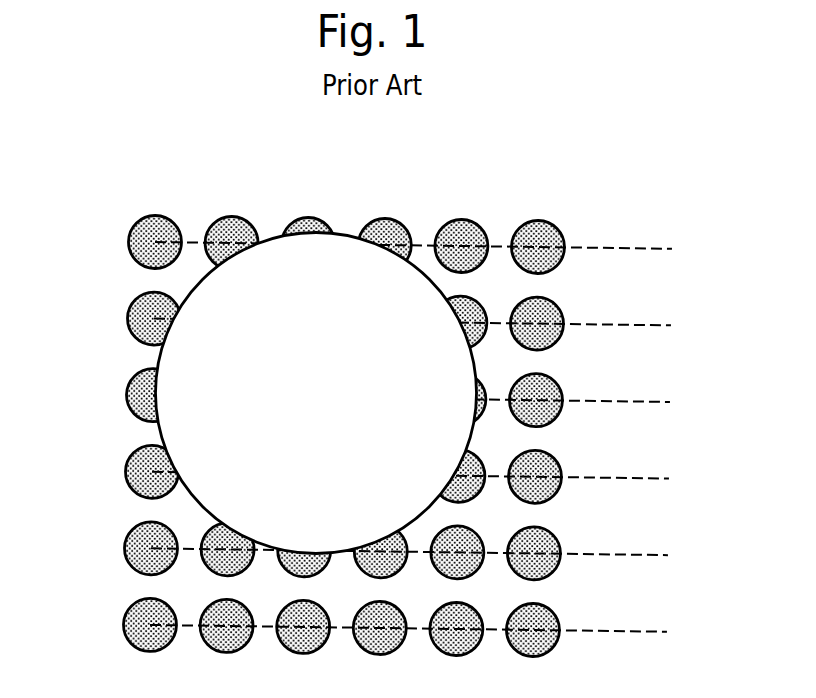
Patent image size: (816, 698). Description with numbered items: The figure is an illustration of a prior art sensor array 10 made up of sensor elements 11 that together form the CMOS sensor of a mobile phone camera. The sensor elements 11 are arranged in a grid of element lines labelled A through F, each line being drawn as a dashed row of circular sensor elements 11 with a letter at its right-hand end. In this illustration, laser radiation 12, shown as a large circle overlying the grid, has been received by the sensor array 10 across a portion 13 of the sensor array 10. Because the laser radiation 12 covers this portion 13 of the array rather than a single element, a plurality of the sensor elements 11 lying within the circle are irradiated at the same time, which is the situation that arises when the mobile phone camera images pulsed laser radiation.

The sensor array 10 is at (83, 206).
The sensor element 11 is at (151, 549).
The laser radiation 12 is at (346, 252).
The portion of the sensor array 13 is at (153, 395).